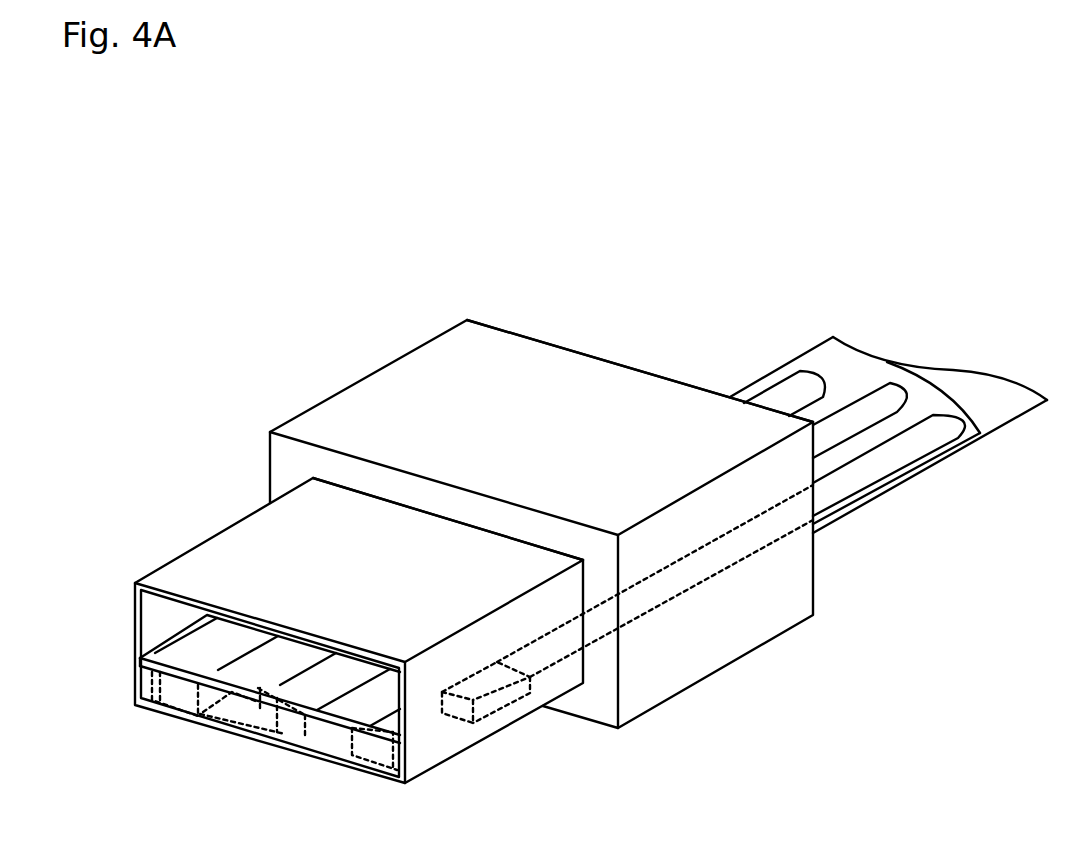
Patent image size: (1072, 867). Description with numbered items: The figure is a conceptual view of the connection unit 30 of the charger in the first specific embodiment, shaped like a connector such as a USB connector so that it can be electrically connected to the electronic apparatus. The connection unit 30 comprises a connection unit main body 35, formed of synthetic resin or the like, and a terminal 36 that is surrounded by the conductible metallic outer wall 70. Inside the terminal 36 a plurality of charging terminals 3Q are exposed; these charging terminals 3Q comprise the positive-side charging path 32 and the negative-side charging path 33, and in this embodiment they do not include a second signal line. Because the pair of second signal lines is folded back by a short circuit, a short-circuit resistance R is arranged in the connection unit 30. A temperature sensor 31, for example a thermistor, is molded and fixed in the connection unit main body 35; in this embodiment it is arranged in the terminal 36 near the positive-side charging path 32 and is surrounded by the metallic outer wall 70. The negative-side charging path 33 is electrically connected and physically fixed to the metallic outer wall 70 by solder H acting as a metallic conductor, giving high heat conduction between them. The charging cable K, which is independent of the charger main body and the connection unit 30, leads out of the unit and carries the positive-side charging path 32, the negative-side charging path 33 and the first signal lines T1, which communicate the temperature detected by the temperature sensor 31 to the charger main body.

The connection unit 30 is at (466, 368).
The temperature sensor 31 is at (497, 700).
The positive-side charging path 32 is at (873, 400).
The negative-side charging path 33 is at (782, 400).
The connection unit main body 35 is at (581, 383).
The terminal 36 is at (288, 532).
The metallic outer wall 70 is at (200, 560).
The charging terminals 3Q is at (373, 705).
The solder H is at (200, 703).
The short-circuit resistance R is at (269, 708).
The charging cable K is at (804, 350).
The first signal lines T1 is at (901, 455).